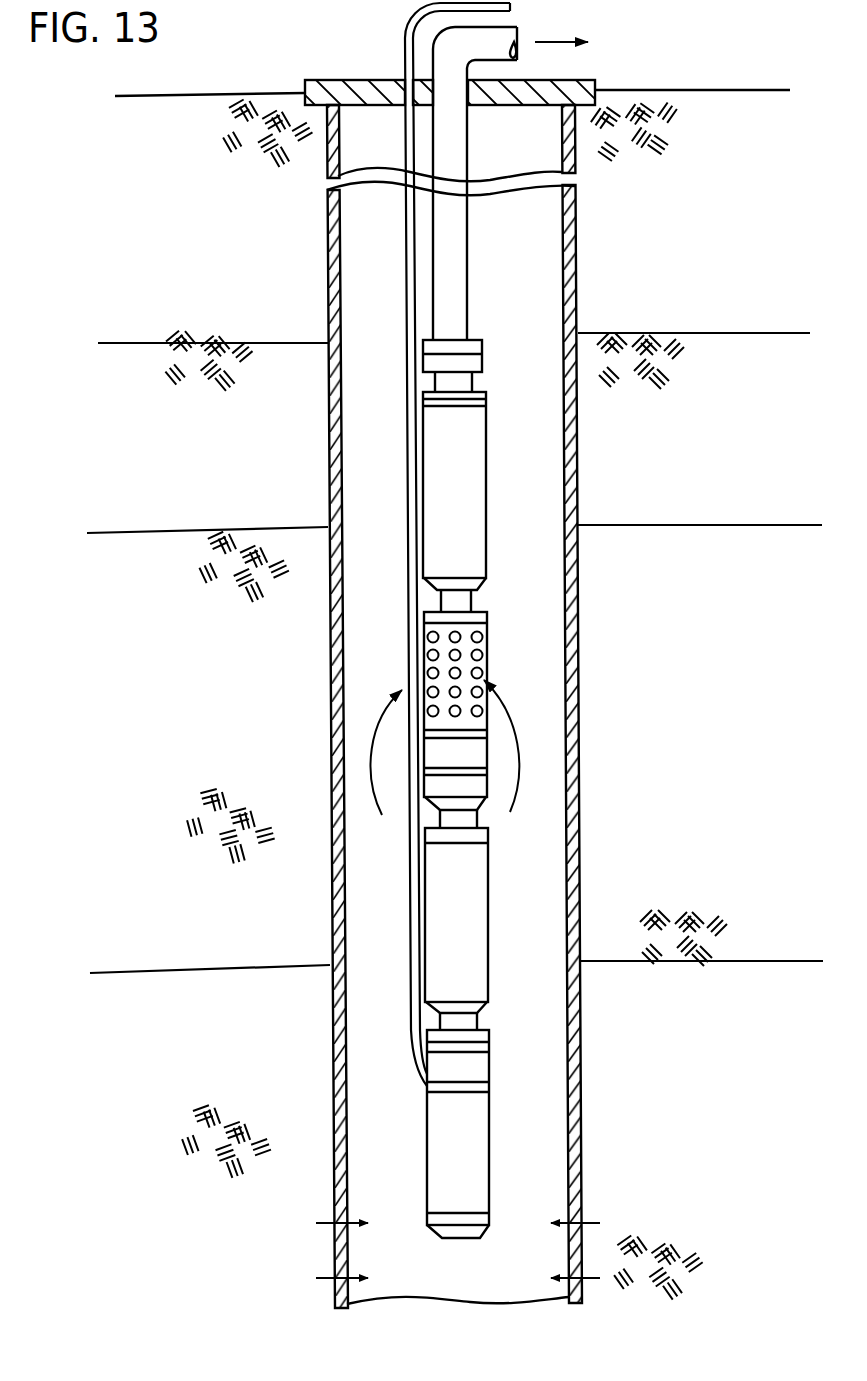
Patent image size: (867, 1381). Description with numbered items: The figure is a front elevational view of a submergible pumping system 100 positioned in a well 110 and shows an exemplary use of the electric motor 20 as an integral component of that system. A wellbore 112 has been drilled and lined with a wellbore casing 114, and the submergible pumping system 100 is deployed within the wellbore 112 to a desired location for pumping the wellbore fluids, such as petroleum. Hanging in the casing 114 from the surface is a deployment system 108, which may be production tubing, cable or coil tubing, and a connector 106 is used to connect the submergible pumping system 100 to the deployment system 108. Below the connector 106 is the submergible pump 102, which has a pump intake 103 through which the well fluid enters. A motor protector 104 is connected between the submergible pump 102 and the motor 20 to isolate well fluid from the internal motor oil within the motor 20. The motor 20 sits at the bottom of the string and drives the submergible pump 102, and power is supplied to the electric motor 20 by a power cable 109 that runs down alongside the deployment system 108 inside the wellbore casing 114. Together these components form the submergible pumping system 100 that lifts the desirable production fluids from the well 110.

The motor 20 is at (472, 1142).
The submergible pumping system 100 is at (535, 212).
The submergible pump 102 is at (467, 450).
The pump intake 103 is at (488, 653).
The motor protector 104 is at (467, 893).
The connector 106 is at (477, 347).
The deployment system 108 is at (460, 302).
The power cable 109 is at (405, 428).
The well 110 is at (392, 1108).
The wellbore 112 is at (372, 305).
The wellbore casing 114 is at (326, 212).